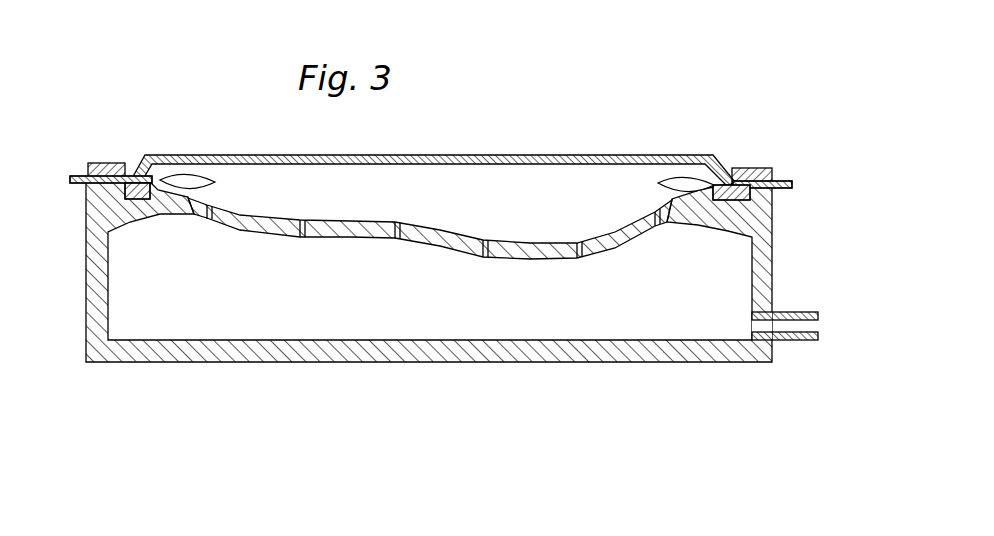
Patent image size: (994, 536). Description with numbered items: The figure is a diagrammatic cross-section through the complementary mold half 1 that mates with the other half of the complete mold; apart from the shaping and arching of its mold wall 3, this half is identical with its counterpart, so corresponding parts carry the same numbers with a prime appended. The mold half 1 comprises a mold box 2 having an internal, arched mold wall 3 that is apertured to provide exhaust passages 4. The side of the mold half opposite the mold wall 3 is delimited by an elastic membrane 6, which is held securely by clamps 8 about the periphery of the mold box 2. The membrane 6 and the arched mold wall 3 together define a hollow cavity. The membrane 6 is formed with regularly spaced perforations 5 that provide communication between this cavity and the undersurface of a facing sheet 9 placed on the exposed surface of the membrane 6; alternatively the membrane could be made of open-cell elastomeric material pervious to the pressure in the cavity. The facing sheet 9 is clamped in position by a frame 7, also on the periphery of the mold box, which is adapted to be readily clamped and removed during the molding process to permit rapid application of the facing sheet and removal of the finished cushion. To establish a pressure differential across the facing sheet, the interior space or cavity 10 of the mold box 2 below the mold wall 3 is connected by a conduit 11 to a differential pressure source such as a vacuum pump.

The mold half 1 is at (206, 384).
The mold box 2 is at (571, 361).
The mold wall 3 is at (366, 241).
The exhaust passages 4 is at (300, 236).
The perforations 5 is at (292, 168).
The elastic membrane 6 is at (500, 168).
The clamping frame 7 is at (103, 163).
The clamps 8 is at (186, 186).
The facing sheet 9 is at (485, 155).
The cavity 10 is at (696, 302).
The conduit 11 is at (785, 312).